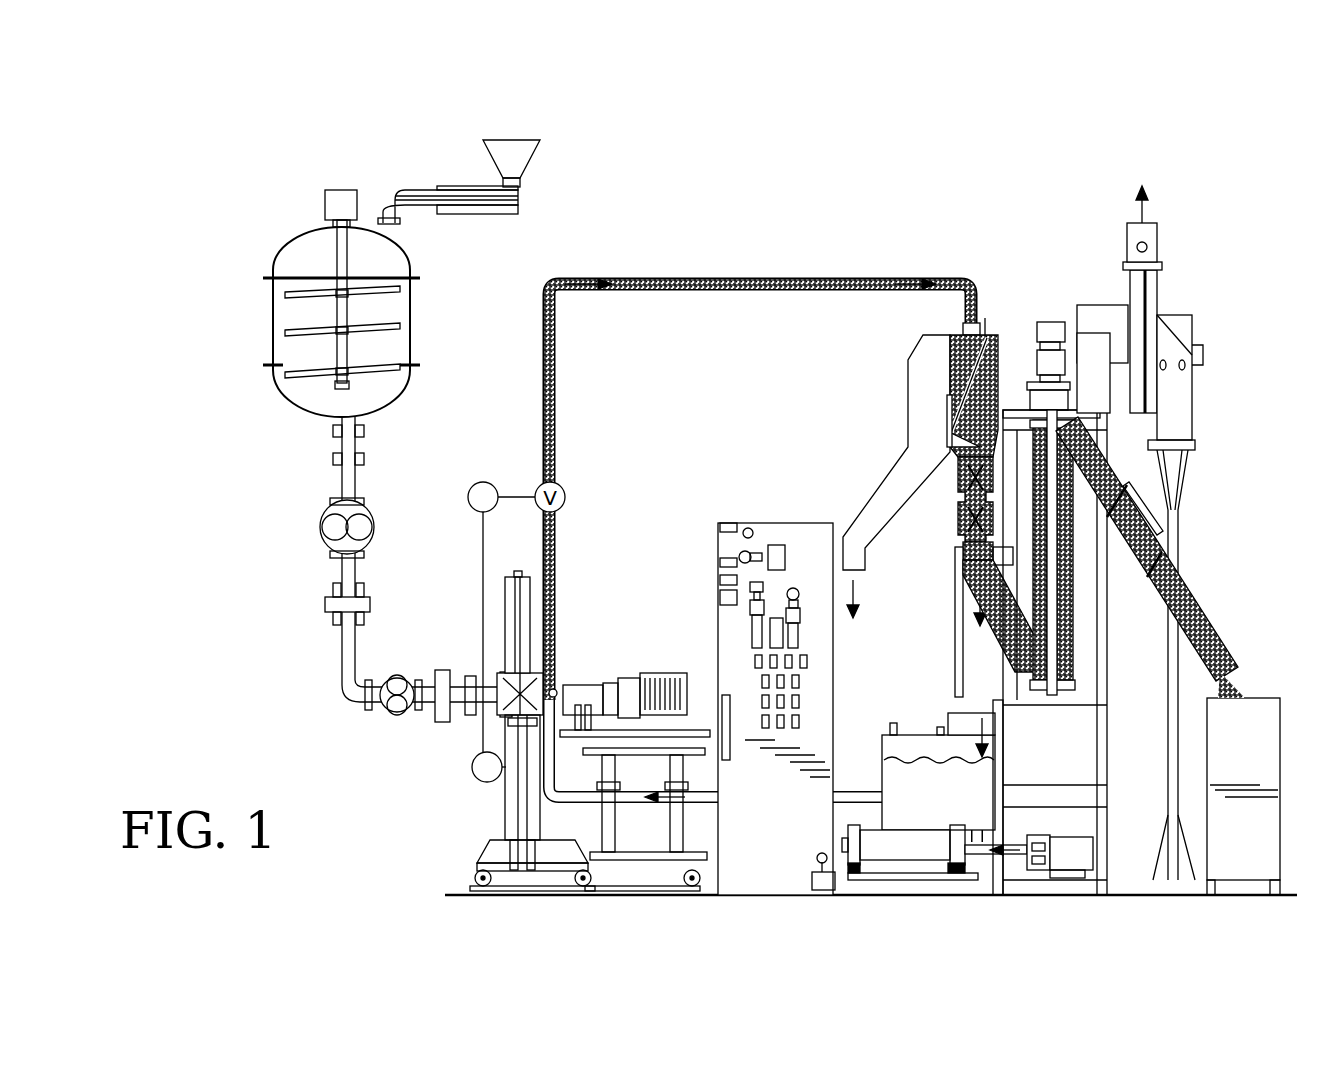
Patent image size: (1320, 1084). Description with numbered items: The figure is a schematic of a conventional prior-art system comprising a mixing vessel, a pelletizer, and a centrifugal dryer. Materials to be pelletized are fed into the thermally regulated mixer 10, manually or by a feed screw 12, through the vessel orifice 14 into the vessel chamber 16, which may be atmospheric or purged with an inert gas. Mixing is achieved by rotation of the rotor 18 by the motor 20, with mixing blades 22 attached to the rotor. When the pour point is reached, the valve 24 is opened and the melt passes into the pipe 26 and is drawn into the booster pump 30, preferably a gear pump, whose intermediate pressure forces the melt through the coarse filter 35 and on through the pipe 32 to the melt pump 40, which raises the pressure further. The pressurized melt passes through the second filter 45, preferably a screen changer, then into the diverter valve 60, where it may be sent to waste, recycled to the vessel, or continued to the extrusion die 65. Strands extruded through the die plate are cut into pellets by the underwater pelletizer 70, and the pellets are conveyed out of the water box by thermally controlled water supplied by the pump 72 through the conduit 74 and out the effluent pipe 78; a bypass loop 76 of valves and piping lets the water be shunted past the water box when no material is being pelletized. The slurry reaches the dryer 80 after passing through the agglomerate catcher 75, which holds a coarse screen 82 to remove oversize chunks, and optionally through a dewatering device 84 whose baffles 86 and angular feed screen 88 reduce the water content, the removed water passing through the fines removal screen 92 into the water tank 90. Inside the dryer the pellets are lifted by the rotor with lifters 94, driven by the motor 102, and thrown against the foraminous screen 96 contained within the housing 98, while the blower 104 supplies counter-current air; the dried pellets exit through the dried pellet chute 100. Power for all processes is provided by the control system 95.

The thermally regulated mixer 10 is at (255, 304).
The feed screw 12 is at (507, 155).
The vessel orifice 14 is at (380, 216).
The vessel chamber 16 is at (310, 398).
The rotor 18 is at (342, 250).
The motor 20 is at (340, 200).
The mixing blades 22 is at (395, 370).
The valve 24 is at (322, 436).
The pipe 26 is at (352, 482).
The booster pump 30 is at (337, 527).
The pipe 32 is at (347, 662).
The coarse filter 35 is at (325, 605).
The melt pump 40 is at (395, 712).
The second filter 45 is at (442, 670).
The diverter valve 60 is at (510, 808).
The extrusion die 65 is at (541, 672).
The underwater pelletizer 70 is at (660, 673).
The pump 72 is at (1067, 858).
The conduit 74 is at (712, 800).
The agglomerate catcher 75 is at (932, 355).
The bypass loop 76 is at (483, 558).
The effluent pipe 78 is at (650, 278).
The centrifugal dryer 80 is at (1060, 295).
The coarse screen 82 is at (960, 380).
The dewatering device 84 is at (955, 553).
The baffles 86 is at (962, 478).
The angular feed screen 88 is at (1007, 625).
The water tank 90 is at (910, 722).
The fines removal screen 92 is at (975, 858).
The rotor with lifters 94 is at (1055, 628).
The control system 95 is at (775, 535).
The foraminous screen 96 is at (1075, 565).
The housing 98 is at (1100, 673).
The dried pellet chute 100 is at (1115, 485).
The motor 102 is at (1043, 320).
The blower 104 is at (1150, 283).